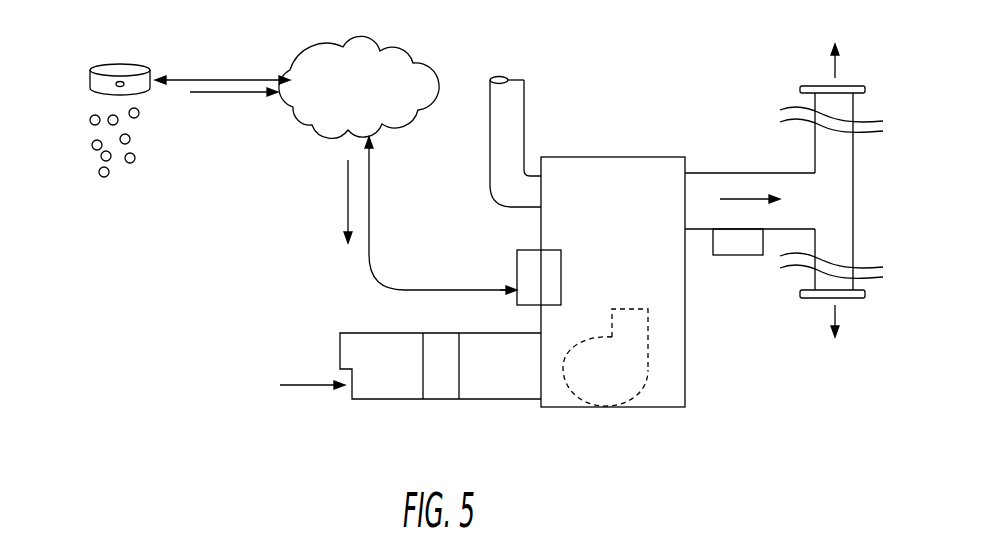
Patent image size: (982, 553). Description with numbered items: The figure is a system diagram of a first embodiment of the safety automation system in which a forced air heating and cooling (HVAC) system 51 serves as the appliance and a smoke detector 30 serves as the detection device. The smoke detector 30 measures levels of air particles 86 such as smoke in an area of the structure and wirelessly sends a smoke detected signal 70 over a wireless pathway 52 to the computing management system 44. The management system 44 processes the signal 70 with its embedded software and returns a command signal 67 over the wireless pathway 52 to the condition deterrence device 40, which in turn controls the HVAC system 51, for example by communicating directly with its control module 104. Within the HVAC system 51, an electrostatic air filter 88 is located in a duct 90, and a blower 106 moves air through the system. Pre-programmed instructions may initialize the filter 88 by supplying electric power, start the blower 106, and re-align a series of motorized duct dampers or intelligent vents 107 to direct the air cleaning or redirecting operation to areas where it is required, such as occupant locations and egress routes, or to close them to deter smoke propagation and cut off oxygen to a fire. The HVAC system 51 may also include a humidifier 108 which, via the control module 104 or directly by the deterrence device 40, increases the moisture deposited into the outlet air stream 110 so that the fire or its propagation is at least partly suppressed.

The smoke detector 30 is at (125, 62).
The wireless pathway 52 is at (205, 80).
The smoke detected signal 70 is at (228, 95).
The air particles 86 is at (92, 149).
The computing management system 44 is at (428, 65).
The command signal 67 is at (348, 192).
The condition deterrence device 40 is at (515, 297).
The control module 104 is at (560, 272).
The forced air heating and cooling (HVAC) system 51 is at (688, 127).
The blower 106 is at (650, 352).
The duct 90 is at (497, 399).
The electrostatic air filter 88 is at (430, 399).
The motorized duct dampers or intelligent vents 107 is at (865, 90).
The outlet air stream 110 is at (755, 200).
The humidifier 108 is at (723, 255).